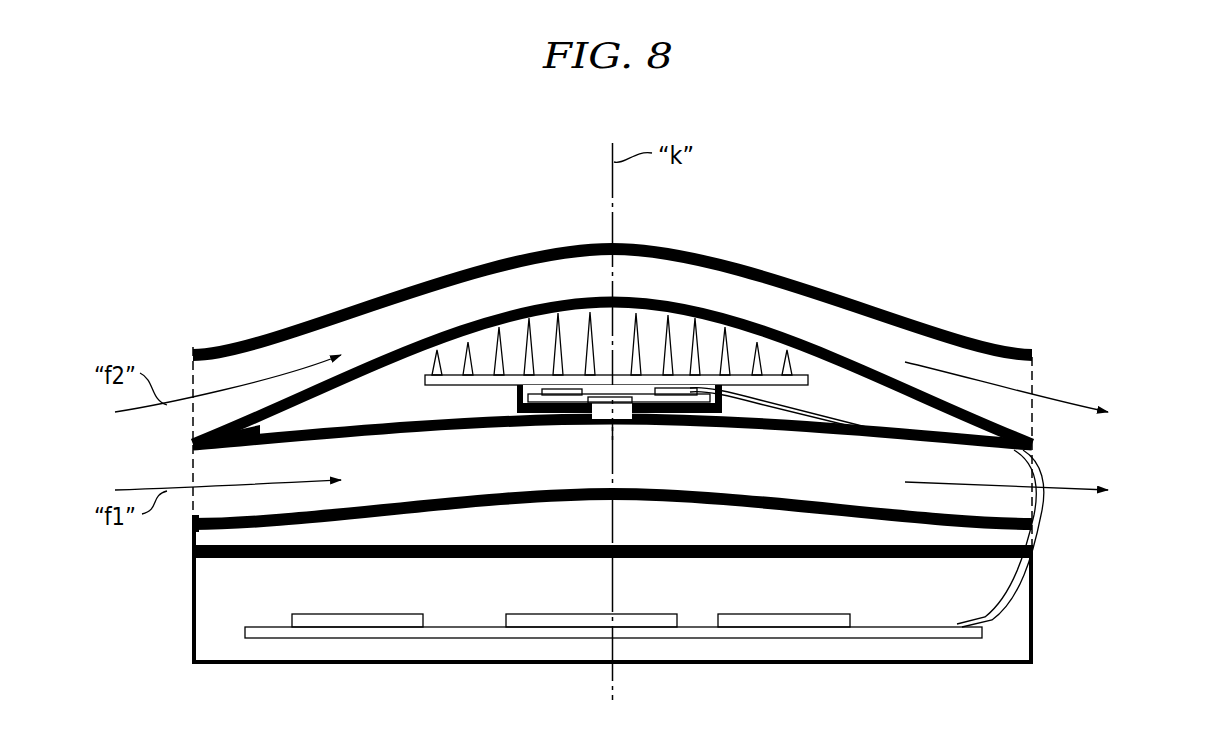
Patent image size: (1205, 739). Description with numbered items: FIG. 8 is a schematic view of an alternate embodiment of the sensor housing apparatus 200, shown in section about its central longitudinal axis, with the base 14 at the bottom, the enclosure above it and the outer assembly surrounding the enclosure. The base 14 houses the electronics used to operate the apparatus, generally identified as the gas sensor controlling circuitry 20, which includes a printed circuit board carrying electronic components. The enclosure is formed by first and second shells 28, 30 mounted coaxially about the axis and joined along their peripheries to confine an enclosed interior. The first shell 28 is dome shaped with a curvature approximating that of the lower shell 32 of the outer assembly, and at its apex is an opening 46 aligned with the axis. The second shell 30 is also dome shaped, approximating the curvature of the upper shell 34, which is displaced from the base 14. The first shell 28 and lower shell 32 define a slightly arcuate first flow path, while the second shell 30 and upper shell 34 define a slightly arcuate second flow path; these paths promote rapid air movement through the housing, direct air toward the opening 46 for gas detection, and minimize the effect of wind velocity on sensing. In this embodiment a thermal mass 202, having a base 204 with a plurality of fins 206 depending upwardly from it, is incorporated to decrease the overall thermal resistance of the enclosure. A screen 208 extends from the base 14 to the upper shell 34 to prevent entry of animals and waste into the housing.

The base 14 is at (1059, 622).
The gas sensor controlling circuitry 20 is at (440, 605).
The first shell 28 is at (234, 452).
The second shell 30 is at (217, 433).
The lower shell 32 is at (410, 507).
The upper shell 34 is at (280, 345).
The opening 46 is at (613, 410).
The sensor housing apparatus 200 is at (734, 240).
The thermal mass 202 is at (679, 388).
The base 204 is at (574, 385).
The fins 206 is at (490, 356).
The screen 208 is at (1032, 371).